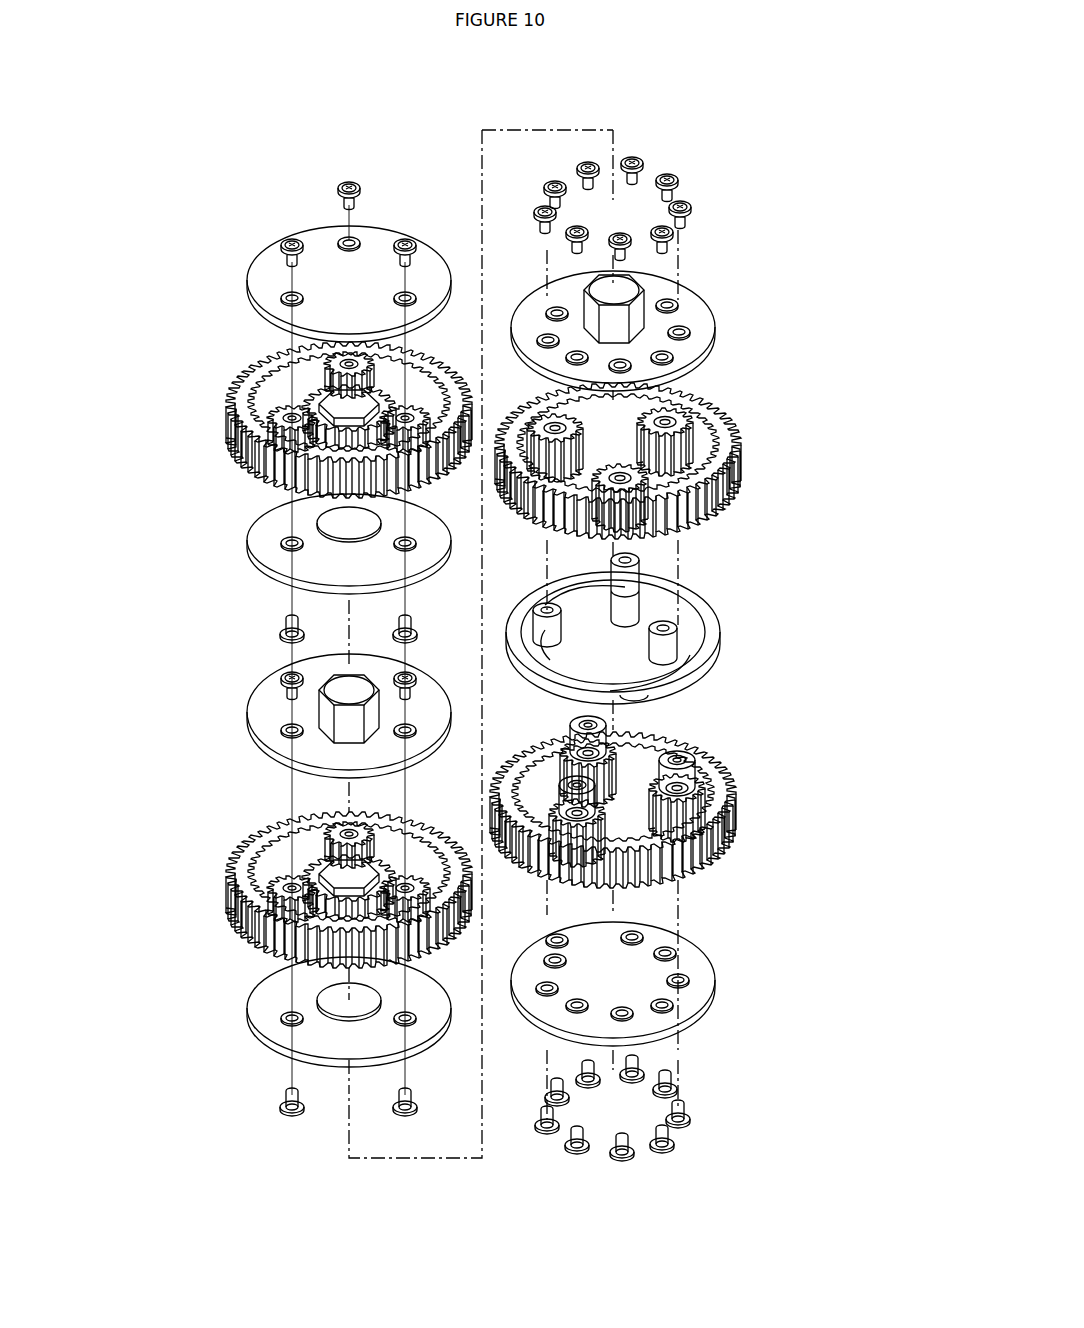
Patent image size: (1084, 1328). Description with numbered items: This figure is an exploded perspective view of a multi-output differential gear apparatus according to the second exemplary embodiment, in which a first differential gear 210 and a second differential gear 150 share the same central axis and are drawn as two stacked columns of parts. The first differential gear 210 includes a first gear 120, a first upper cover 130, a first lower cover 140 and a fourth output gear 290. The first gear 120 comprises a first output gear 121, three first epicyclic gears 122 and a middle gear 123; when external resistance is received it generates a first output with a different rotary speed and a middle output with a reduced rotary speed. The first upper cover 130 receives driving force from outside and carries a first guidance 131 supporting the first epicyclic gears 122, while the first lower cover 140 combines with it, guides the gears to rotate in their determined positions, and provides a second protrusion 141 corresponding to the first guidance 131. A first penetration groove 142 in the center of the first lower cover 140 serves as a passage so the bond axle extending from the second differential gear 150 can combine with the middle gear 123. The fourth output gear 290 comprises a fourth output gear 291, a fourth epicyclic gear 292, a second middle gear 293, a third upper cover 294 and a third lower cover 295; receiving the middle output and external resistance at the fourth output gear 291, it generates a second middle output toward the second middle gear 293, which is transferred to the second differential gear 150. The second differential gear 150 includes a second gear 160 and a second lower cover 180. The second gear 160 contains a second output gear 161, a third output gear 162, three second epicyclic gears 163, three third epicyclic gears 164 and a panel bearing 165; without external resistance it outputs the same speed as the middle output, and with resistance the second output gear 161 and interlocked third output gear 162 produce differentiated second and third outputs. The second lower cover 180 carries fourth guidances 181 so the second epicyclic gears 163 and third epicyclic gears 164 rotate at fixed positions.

The first gear 120 is at (178, 388).
The first output gear 121 is at (240, 443).
The first epicyclic gears 122 is at (300, 416).
The middle gear 123 is at (288, 402).
The first upper cover 130 is at (258, 286).
The first guidance 131 is at (338, 187).
The first lower cover 140 is at (258, 545).
The second protrusion 141 is at (283, 629).
The first penetration groove 142 is at (334, 528).
The second differential gear 150 is at (843, 154).
The second gear 160 is at (795, 392).
The second output gear 161 is at (713, 400).
The third output gear 162 is at (718, 770).
The second epicyclic gears 163 is at (711, 429).
The third epicyclic gears 164 is at (698, 805).
The panel bearing 165 is at (718, 618).
The second lower cover 180 is at (706, 978).
The fourth guidances 181 is at (684, 1105).
The first differential gear 210 is at (125, 177).
The fourth output gear 290 is at (180, 715).
The fourth output gear 291 is at (238, 914).
The fourth epicyclic gear 292 is at (300, 887).
The second middle gear 293 is at (286, 876).
The third upper cover 294 is at (258, 713).
The third lower cover 295 is at (258, 996).